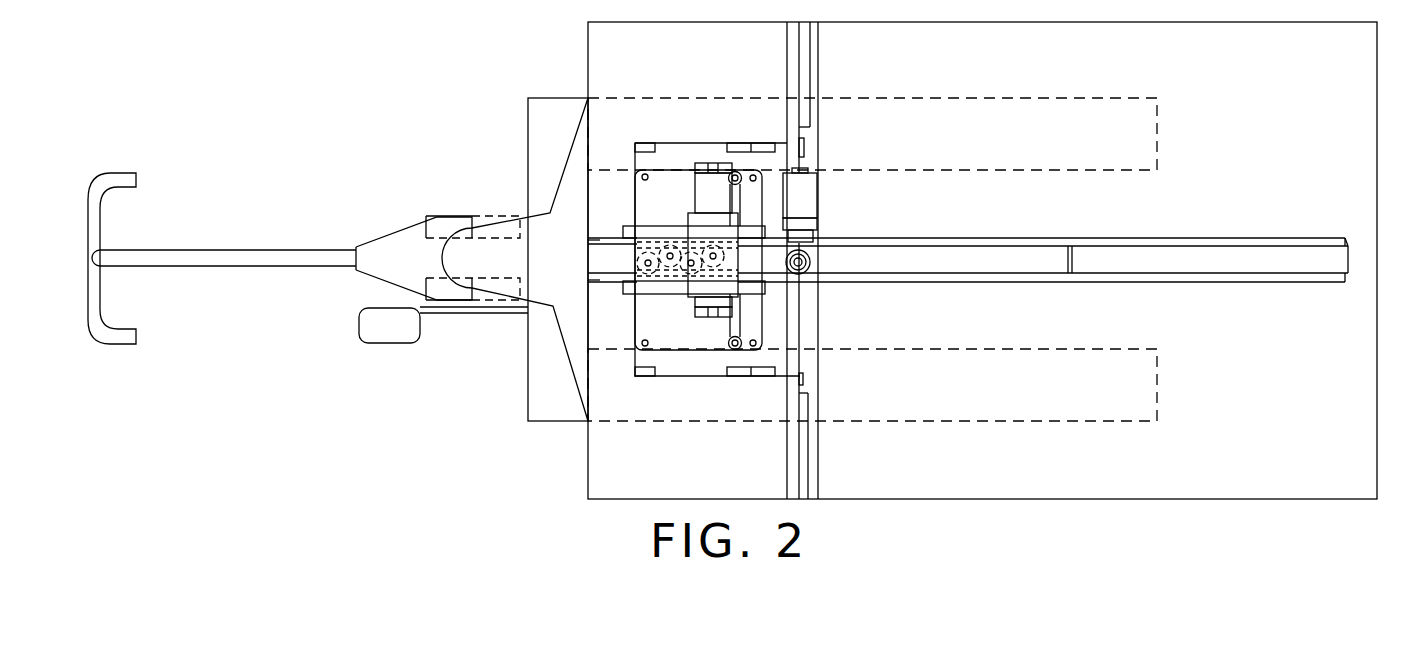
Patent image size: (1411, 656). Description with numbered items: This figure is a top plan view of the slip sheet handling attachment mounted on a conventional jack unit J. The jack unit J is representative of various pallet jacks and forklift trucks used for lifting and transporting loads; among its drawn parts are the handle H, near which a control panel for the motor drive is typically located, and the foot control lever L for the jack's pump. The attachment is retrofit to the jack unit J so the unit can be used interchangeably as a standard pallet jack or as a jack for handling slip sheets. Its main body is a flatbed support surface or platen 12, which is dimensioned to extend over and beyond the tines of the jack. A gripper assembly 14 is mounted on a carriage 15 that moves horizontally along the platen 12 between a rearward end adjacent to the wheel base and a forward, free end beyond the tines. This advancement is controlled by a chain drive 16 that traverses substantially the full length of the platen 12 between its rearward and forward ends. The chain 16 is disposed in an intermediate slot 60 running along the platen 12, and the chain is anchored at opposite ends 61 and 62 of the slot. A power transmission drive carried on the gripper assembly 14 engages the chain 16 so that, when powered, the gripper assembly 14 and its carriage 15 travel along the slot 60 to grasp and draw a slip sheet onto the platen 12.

The platen 12 is at (1128, 482).
The gripper assembly 14 is at (777, 192).
The carriage 15 is at (628, 222).
The chain drive 16 is at (882, 265).
The intermediate slot 60 is at (1132, 283).
The chain end 61 is at (593, 257).
The chain end 62 is at (1349, 252).
The jack unit J is at (316, 206).
The handle H is at (212, 267).
The foot control lever L is at (388, 330).